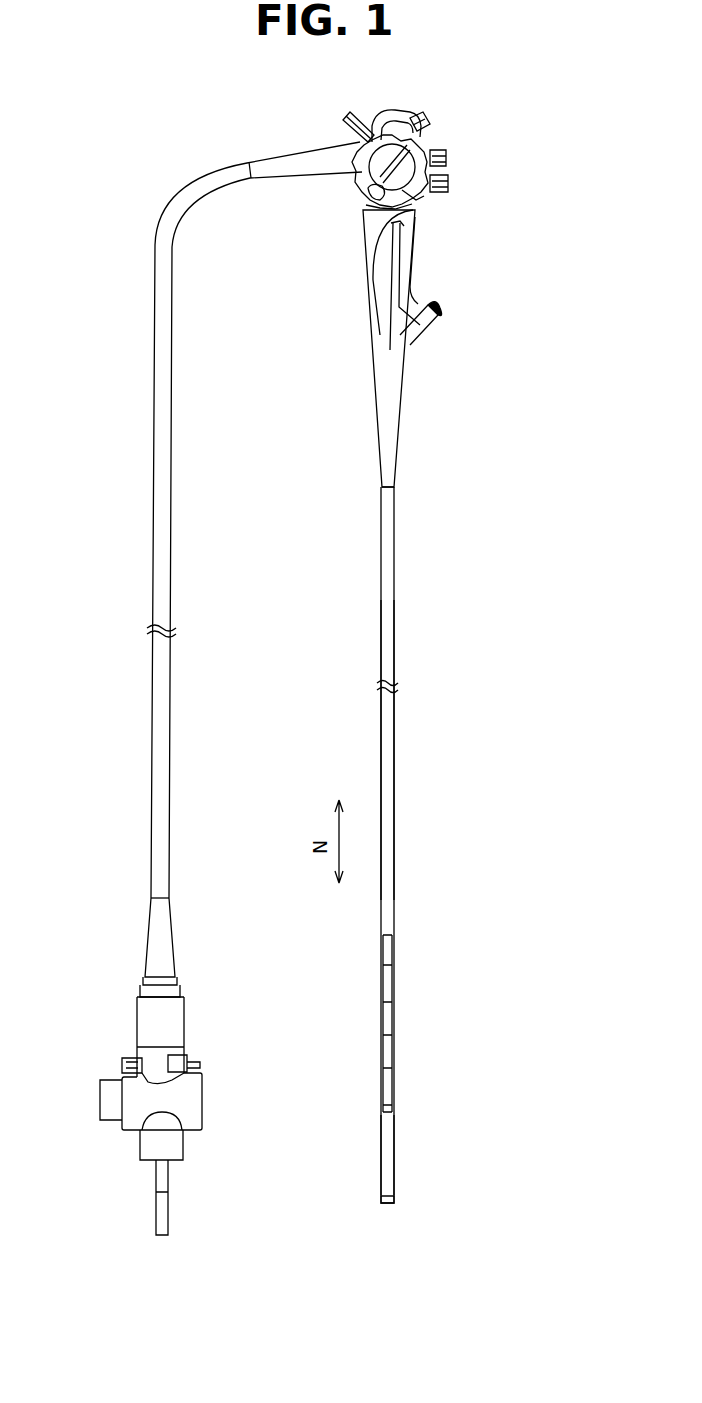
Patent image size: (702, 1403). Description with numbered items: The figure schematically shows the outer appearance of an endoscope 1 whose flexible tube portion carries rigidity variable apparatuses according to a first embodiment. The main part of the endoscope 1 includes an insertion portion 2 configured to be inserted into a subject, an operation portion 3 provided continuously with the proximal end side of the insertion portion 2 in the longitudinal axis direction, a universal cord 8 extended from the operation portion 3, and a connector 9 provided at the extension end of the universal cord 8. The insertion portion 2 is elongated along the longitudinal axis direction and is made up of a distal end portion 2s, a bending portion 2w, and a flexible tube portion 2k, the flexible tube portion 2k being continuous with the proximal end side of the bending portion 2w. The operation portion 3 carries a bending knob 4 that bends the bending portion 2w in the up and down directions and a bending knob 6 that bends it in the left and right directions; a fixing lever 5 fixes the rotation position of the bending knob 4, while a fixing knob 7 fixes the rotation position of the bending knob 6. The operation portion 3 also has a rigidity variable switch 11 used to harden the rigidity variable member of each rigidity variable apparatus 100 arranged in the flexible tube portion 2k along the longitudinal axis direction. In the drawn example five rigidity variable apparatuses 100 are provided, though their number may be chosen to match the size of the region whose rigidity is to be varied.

The endoscope 1 is at (480, 192).
The insertion portion 2 is at (516, 628).
The flexible tube portion 2k is at (392, 716).
The bending portion 2w is at (387, 1137).
The distal end portion 2s is at (394, 1197).
The operation portion 3 is at (395, 270).
The bending knob 4 is at (358, 170).
The fixing lever 5 is at (420, 120).
The bending knob 6 is at (402, 110).
The fixing knob 7 is at (420, 190).
The universal cord 8 is at (170, 333).
The connector 9 is at (128, 1082).
The rigidity variable switch 11 is at (363, 108).
The rigidity variable apparatus 100 is at (381, 955).